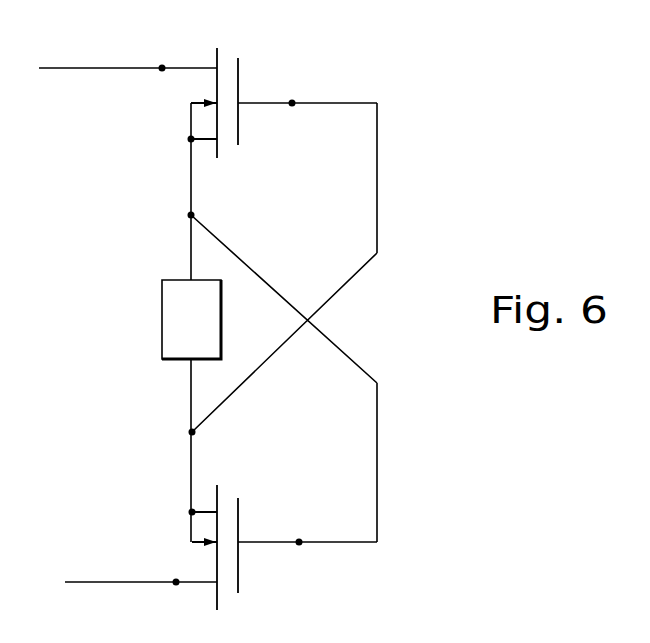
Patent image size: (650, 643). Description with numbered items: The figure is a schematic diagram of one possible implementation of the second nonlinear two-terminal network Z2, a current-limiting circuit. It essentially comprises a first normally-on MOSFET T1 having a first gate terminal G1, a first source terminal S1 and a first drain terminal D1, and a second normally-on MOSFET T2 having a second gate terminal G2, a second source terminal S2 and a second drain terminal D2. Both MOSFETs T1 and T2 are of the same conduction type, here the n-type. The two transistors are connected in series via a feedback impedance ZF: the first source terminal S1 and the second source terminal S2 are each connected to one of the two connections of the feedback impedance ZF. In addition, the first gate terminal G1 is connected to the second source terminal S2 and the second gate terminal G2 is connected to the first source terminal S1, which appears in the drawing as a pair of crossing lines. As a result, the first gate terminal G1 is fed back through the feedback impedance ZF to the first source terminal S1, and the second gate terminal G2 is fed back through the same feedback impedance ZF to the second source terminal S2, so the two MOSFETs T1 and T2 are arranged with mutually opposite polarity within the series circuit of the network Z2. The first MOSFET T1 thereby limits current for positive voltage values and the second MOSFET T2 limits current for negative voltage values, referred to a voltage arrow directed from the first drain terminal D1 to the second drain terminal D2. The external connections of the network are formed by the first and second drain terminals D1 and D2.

The second nonlinear two-terminal network Z2 is at (50, 382).
The first drain terminal D1 is at (128, 52).
The first normally-on MOSFET T1 is at (228, 143).
The first gate terminal G1 is at (307, 89).
The first source terminal S1 is at (171, 210).
The feedback impedance ZF is at (172, 353).
The second source terminal S2 is at (173, 444).
The second normally-on MOSFET T2 is at (227, 510).
The second gate terminal G2 is at (307, 560).
The second drain terminal D2 is at (141, 598).